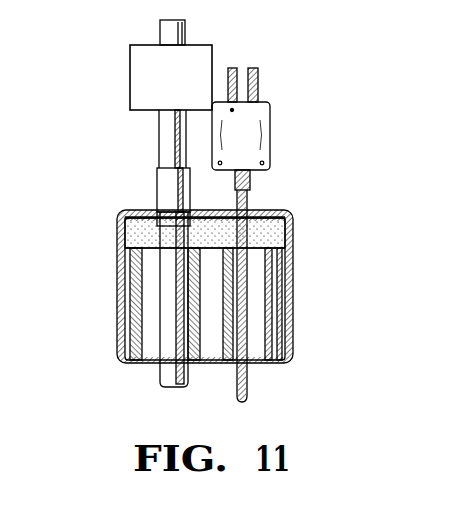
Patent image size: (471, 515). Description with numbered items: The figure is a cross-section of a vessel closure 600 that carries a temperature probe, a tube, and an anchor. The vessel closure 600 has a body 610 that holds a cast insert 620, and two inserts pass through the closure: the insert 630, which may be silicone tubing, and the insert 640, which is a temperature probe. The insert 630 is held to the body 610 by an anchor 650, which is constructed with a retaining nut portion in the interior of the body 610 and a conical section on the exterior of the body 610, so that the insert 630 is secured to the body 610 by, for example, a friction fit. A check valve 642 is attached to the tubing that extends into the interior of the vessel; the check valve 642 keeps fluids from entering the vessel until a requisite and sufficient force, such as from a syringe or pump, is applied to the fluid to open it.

The vessel closure 600 is at (104, 200).
The body 610 is at (293, 216).
The cast insert 620 is at (125, 238).
The insert 630 is at (159, 118).
The insert 640 is at (270, 132).
The check valve 642 is at (130, 82).
The anchor 650 is at (157, 176).